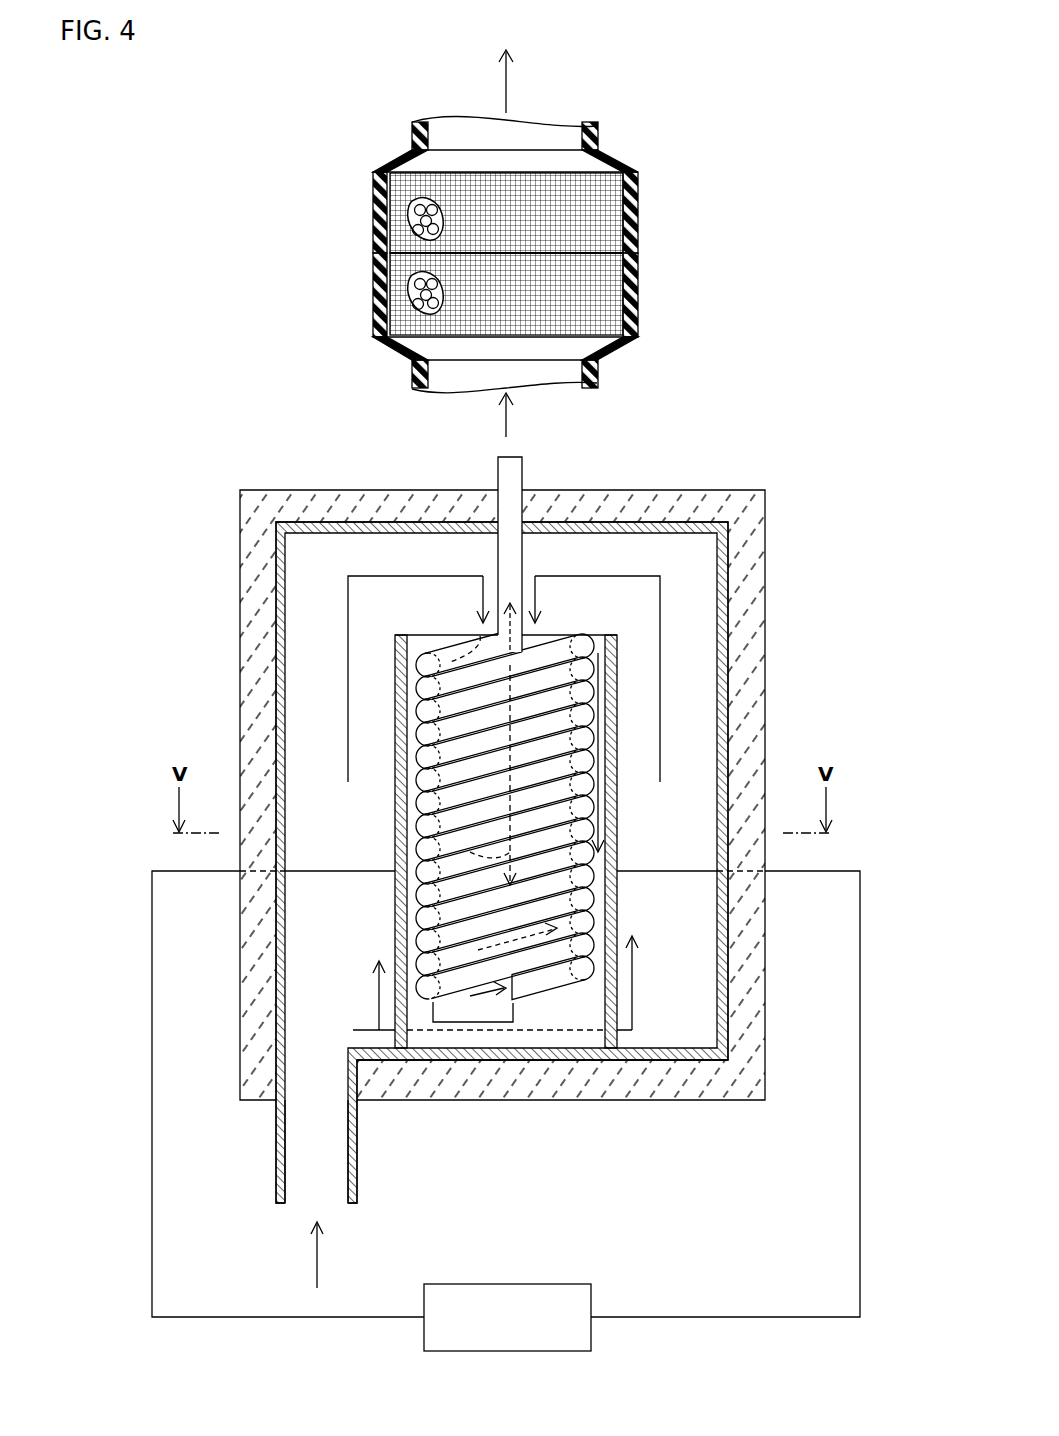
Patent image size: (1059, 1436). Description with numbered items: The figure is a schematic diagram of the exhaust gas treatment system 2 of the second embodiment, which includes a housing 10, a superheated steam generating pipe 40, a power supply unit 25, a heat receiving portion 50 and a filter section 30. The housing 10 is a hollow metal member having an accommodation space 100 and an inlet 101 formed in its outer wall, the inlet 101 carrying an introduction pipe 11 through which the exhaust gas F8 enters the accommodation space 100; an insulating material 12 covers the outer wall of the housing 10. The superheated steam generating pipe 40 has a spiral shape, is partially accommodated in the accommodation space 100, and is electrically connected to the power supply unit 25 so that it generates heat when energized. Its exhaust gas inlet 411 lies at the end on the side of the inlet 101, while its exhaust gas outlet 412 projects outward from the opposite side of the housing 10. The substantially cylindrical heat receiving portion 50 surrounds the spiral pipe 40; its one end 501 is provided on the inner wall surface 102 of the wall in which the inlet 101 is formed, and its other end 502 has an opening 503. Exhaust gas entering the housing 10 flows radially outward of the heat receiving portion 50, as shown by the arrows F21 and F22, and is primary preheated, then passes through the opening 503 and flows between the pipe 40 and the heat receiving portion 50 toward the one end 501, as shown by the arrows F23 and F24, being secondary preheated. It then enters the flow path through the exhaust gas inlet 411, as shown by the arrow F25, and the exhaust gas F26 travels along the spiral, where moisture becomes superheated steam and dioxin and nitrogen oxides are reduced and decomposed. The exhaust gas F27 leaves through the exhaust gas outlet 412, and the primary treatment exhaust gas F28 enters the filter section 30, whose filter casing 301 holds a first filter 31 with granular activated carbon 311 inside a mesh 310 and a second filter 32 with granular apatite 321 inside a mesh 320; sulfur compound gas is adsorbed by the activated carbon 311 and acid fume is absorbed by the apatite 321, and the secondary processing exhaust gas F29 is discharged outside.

The exhaust gas treatment system 2 is at (722, 130).
The filter section 30 is at (652, 262).
The first filter 31 is at (642, 296).
The second filter 32 is at (642, 222).
The filter casing 301 is at (640, 178).
The mesh 310 is at (397, 325).
The granular activated carbon 311 is at (387, 283).
The mesh 320 is at (397, 247).
The granular apatite 321 is at (387, 216).
The exhaust gas outlet 412 is at (522, 455).
The exhaust gas inlet 411 is at (473, 980).
The superheated steam generating pipe 40 is at (407, 800).
The heat receiving portion 50 is at (393, 886).
The one end 501 is at (395, 1043).
The other end 502 is at (400, 638).
The opening 503 is at (598, 637).
The housing 10 is at (280, 745).
The introduction pipe 11 is at (276, 1148).
The insulating material 12 is at (255, 551).
The accommodation space 100 is at (315, 978).
The inlet 101 is at (318, 1105).
The inner wall surface 102 is at (680, 1048).
The power supply unit 25 is at (568, 1300).
The exhaust gas F8 is at (316, 1252).
The exhaust gas flow F21 is at (634, 973).
The exhaust gas flow F22 is at (482, 598).
The exhaust gas flow F23 is at (470, 852).
The exhaust gas flow F24 is at (600, 809).
The exhaust gas flow F25 is at (515, 1013).
The exhaust gas F26 is at (478, 950).
The exhaust gas F27 is at (480, 636).
The primary treatment exhaust gas F28 is at (506, 432).
The secondary processing exhaust gas F29 is at (506, 95).